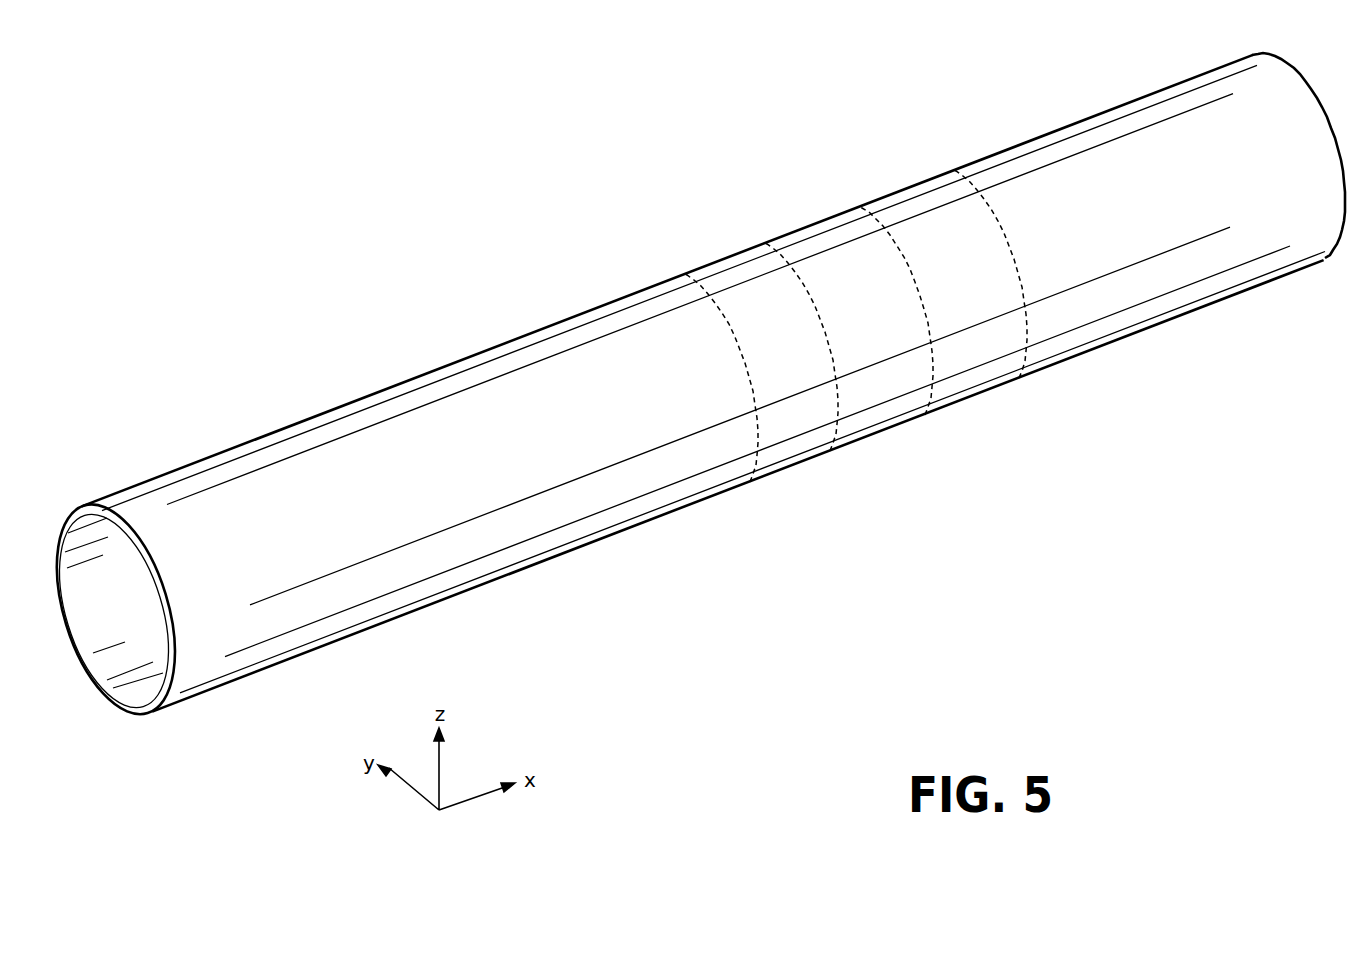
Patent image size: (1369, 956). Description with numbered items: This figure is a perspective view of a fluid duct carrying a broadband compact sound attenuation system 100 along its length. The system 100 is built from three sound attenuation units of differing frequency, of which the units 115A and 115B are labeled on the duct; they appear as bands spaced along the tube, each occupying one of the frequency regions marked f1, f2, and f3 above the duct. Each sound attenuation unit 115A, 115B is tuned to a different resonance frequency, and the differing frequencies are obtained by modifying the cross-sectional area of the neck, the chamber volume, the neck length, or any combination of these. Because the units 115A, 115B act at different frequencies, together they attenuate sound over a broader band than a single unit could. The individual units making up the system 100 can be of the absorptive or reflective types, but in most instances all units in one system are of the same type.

The broadband compact sound attenuation system 100 is at (241, 146).
The sound attenuation unit 115A is at (802, 442).
The sound attenuation unit 115B is at (900, 405).
The first region f1 is at (699, 247).
The second region f2 is at (795, 210).
The third region f3 is at (891, 174).